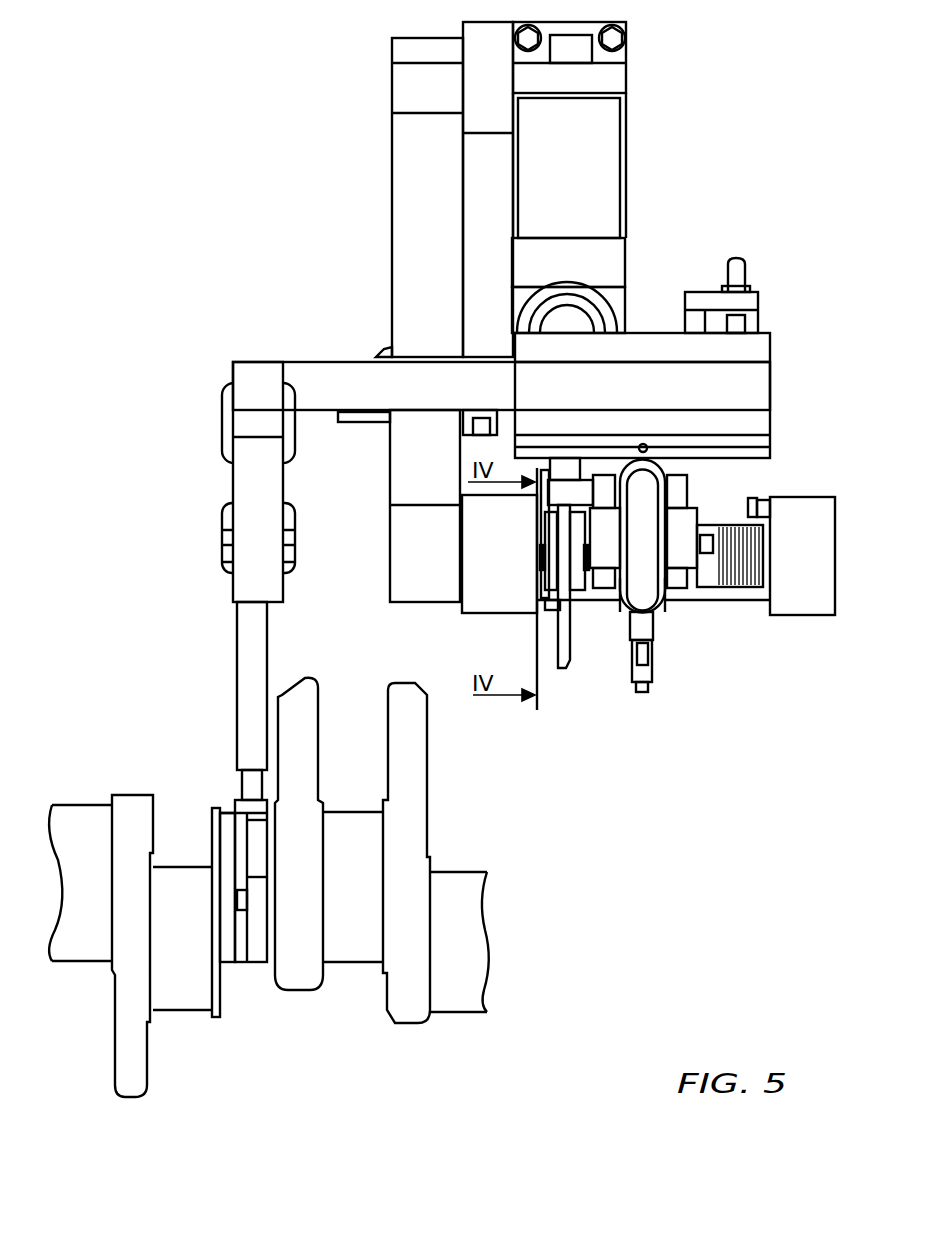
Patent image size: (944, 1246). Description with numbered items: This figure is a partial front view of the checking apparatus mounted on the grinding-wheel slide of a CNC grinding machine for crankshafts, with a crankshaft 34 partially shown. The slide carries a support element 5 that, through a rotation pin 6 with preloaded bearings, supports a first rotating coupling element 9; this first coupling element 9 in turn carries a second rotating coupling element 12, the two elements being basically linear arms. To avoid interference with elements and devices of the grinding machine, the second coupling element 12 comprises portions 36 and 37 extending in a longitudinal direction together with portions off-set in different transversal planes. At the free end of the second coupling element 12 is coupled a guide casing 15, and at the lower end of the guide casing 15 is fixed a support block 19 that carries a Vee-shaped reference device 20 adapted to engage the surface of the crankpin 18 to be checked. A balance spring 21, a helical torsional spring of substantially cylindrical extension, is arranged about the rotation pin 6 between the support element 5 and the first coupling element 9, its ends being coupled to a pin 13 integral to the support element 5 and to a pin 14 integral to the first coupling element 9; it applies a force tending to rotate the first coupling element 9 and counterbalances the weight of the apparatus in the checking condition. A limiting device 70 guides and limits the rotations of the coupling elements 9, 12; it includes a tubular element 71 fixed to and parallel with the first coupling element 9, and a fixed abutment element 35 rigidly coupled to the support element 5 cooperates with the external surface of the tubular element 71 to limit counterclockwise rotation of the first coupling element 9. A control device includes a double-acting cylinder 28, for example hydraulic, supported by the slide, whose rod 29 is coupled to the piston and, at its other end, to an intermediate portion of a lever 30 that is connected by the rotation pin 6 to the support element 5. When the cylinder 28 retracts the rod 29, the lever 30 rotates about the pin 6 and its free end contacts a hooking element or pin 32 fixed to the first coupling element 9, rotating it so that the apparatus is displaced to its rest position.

The double-acting cylinder 28 is at (627, 188).
The rod 29 is at (565, 465).
The hooking element or pin 32 is at (580, 490).
The portion 36 is at (727, 368).
The second rotating coupling element 12 is at (717, 422).
The portion 37 is at (758, 428).
The pin 13 is at (757, 500).
The first rotating coupling element 9 is at (672, 523).
The rotation pin 6 is at (765, 600).
The balance spring 21 is at (740, 590).
The pin 14 is at (688, 545).
The limiting device 70 is at (666, 616).
The tubular element 71 is at (638, 577).
The fixed abutment element 35 is at (643, 653).
The lever 30 is at (563, 660).
The support element 5 is at (471, 604).
The guide casing 15 is at (247, 687).
The support block 19 is at (230, 790).
The reference device 20 is at (250, 945).
The crankpin 18 is at (225, 945).
The crankshaft 34 is at (410, 855).